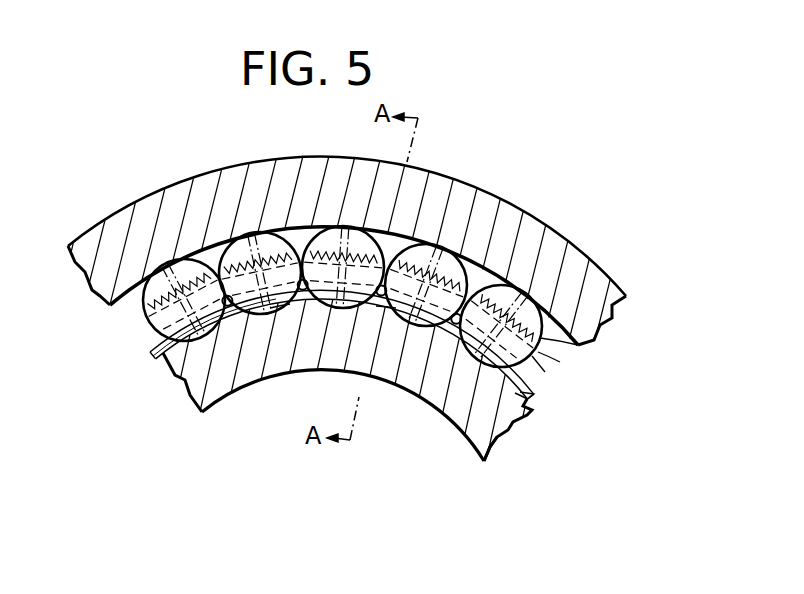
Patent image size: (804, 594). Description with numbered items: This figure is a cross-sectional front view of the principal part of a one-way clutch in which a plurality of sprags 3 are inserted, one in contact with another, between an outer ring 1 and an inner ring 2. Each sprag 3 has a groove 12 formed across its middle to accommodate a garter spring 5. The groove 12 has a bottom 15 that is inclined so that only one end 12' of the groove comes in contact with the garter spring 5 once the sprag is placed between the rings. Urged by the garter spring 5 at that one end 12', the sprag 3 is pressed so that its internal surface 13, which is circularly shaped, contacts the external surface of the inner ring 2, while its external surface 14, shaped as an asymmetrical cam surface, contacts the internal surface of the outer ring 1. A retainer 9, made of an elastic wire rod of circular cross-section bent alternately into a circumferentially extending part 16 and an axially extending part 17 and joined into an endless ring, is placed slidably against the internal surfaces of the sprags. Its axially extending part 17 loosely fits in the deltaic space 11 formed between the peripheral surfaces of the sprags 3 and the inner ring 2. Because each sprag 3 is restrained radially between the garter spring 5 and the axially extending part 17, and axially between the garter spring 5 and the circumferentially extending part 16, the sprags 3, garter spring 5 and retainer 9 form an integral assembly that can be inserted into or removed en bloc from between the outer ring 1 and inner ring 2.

The outer ring 1 is at (583, 268).
The inner ring 2 is at (224, 386).
The sprag 3 is at (537, 340).
The garter spring 5 is at (538, 353).
The retainer 9 is at (529, 466).
The deltaic space 11 is at (277, 313).
The groove 12 is at (559, 395).
The one end of the groove 12' is at (513, 273).
The internal surface of the sprag 13 is at (412, 318).
The external surface of the sprag 14 is at (457, 250).
The bottom of the groove 15 is at (253, 273).
The circumferentially extending part 16 is at (533, 382).
The axially extending part 17 is at (472, 432).